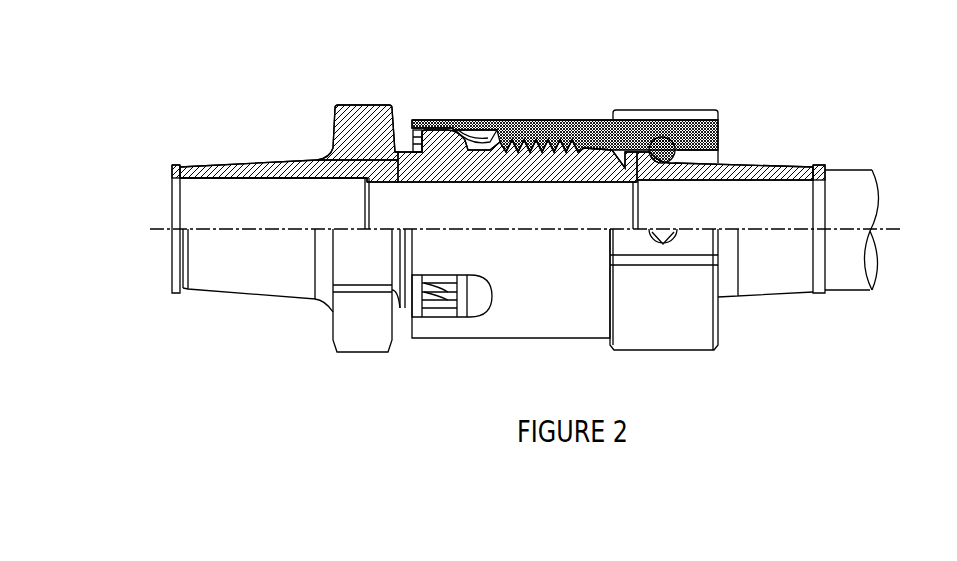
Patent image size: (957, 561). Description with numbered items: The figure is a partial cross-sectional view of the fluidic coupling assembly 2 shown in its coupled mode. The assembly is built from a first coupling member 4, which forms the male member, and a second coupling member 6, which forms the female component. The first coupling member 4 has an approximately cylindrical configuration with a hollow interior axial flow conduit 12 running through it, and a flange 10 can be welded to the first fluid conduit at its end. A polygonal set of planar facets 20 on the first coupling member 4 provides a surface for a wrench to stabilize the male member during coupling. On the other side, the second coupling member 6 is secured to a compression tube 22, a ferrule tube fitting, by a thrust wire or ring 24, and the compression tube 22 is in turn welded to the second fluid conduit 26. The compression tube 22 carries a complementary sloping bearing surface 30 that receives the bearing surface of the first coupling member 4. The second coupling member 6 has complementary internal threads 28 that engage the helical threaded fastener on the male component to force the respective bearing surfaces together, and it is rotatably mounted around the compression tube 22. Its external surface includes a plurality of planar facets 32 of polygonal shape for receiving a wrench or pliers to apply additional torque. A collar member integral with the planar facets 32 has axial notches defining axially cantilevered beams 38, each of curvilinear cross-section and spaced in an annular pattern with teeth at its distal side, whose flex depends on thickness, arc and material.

The fluidic coupling assembly 2 is at (427, 95).
The first coupling member 4 is at (261, 159).
The second coupling member 6 is at (523, 339).
The flange 10 is at (179, 294).
The hollow interior axial flow conduit 12 is at (241, 181).
The polygonal set of planar facets 20 is at (360, 338).
The compression tube 22 is at (772, 280).
The thrust wire or ring 24 is at (668, 139).
The second fluid conduit 26 is at (843, 268).
The internal threads 28 is at (536, 121).
The sloping bearing surface 30 is at (630, 162).
The planar facets 32 is at (650, 327).
The cantilevered beams 38 is at (429, 326).